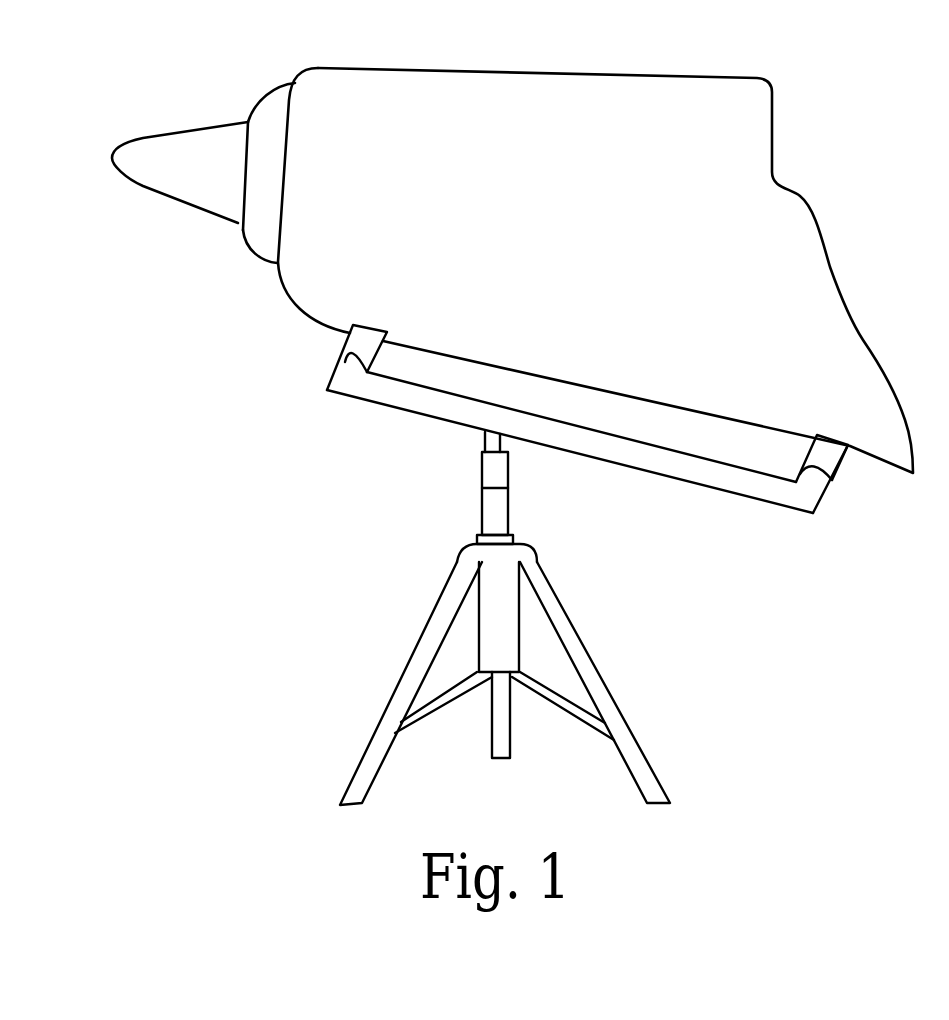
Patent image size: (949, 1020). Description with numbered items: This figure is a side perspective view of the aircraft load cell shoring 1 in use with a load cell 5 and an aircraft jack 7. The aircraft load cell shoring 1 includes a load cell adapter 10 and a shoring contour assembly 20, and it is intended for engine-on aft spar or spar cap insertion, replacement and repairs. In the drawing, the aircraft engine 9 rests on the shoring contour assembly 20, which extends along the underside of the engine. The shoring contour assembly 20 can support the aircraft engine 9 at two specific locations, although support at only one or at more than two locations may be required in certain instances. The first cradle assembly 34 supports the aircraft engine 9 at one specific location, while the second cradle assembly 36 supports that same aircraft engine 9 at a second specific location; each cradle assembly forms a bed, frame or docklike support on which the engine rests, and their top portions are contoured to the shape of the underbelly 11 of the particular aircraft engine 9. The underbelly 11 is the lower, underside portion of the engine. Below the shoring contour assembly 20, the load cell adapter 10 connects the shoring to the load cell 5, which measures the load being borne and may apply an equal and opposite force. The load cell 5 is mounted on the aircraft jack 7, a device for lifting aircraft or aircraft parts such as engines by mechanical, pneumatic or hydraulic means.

The aircraft load cell shoring 1 is at (702, 472).
The load cell 5 is at (482, 470).
The aircraft jack 7 is at (404, 673).
The aircraft engine 9 is at (575, 200).
The load cell adapter 10 is at (485, 442).
The underbelly 11 is at (540, 380).
The shoring contour assembly 20 is at (638, 470).
The first cradle assembly 34 is at (343, 343).
The second cradle assembly 36 is at (833, 477).